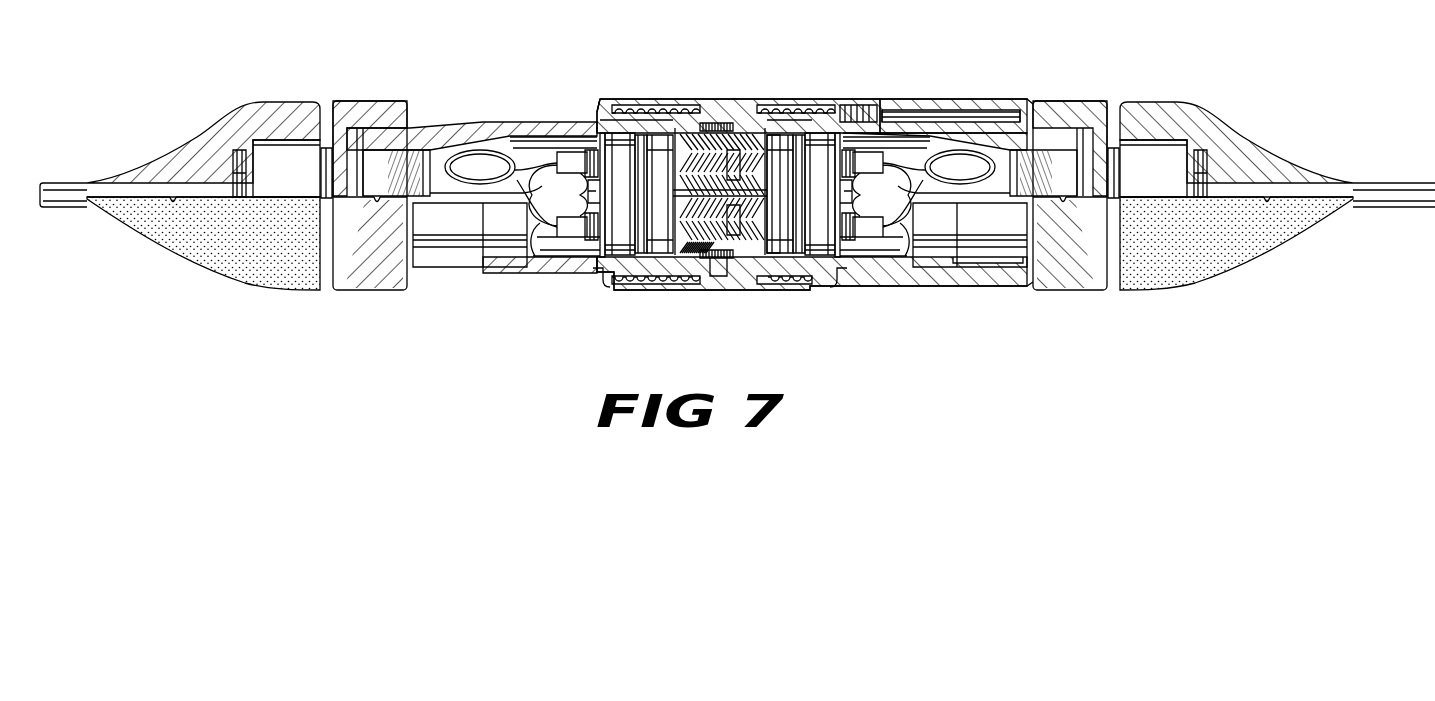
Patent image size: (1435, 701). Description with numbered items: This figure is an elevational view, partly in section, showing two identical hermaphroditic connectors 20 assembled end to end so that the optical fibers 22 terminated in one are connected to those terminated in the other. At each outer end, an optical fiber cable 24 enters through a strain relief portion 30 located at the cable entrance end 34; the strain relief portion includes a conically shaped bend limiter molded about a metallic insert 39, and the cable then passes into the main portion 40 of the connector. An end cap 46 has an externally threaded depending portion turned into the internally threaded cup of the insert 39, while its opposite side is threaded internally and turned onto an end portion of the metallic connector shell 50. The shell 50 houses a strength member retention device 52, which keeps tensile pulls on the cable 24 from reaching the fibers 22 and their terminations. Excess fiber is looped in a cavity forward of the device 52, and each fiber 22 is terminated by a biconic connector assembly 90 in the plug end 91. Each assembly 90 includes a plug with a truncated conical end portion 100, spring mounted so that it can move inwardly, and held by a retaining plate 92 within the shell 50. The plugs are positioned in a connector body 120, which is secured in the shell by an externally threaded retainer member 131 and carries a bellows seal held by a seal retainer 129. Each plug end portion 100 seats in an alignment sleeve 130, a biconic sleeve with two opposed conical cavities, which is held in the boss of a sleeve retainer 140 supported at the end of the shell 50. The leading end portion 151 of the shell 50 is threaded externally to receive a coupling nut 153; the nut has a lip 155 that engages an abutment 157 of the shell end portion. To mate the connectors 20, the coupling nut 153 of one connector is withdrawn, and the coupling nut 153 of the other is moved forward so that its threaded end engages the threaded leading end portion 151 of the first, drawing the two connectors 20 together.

The hermaphroditic connector 20 is at (754, 37).
The optical fibers 22 is at (535, 188).
The optical fiber cable 24 is at (78, 183).
The strain relief portion 30 is at (208, 129).
The cable entrance end 34 is at (289, 93).
The metallic insert 39 is at (289, 167).
The main portion 40 is at (488, 121).
The end cap 46 is at (340, 292).
The connector shell 50 is at (516, 268).
The strength member retention device 52 is at (420, 150).
The biconic connector assembly 90 is at (570, 198).
The plug end 91 is at (732, 278).
The retaining plate 92 is at (602, 233).
The end portion 100 is at (697, 164).
The connector body 120 is at (637, 177).
The seal retainer 129 is at (676, 196).
The alignment sleeve 130 is at (716, 166).
The retainer member 131 is at (737, 125).
The sleeve retainer 140 is at (764, 183).
The leading end portion 151 is at (632, 275).
The coupling nut 153 is at (827, 103).
The lip 155 is at (598, 117).
The abutment 157 is at (620, 123).